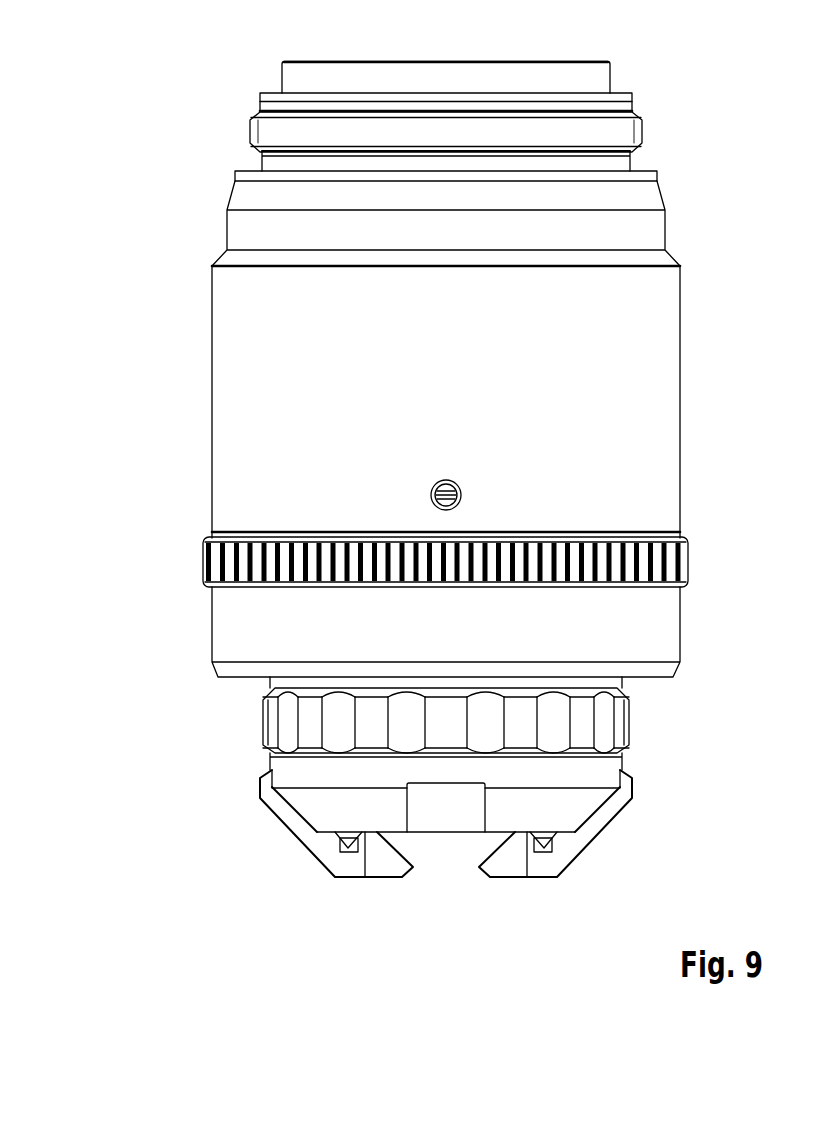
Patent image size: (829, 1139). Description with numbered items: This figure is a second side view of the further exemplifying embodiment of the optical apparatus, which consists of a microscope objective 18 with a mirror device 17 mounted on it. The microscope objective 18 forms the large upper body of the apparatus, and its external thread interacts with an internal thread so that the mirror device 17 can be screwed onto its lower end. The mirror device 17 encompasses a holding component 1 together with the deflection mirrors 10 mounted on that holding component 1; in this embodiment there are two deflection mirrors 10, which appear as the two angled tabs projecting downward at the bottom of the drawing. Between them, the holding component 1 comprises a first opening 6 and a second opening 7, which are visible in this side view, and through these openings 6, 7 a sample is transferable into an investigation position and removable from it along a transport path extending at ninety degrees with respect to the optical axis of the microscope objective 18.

The microscope objective 18 is at (139, 266).
The mirror device 17 is at (418, 830).
The holding component 1 is at (485, 848).
The deflection mirrors 10 is at (302, 827).
The first opening 6 is at (446, 883).
The second opening 7 is at (441, 886).